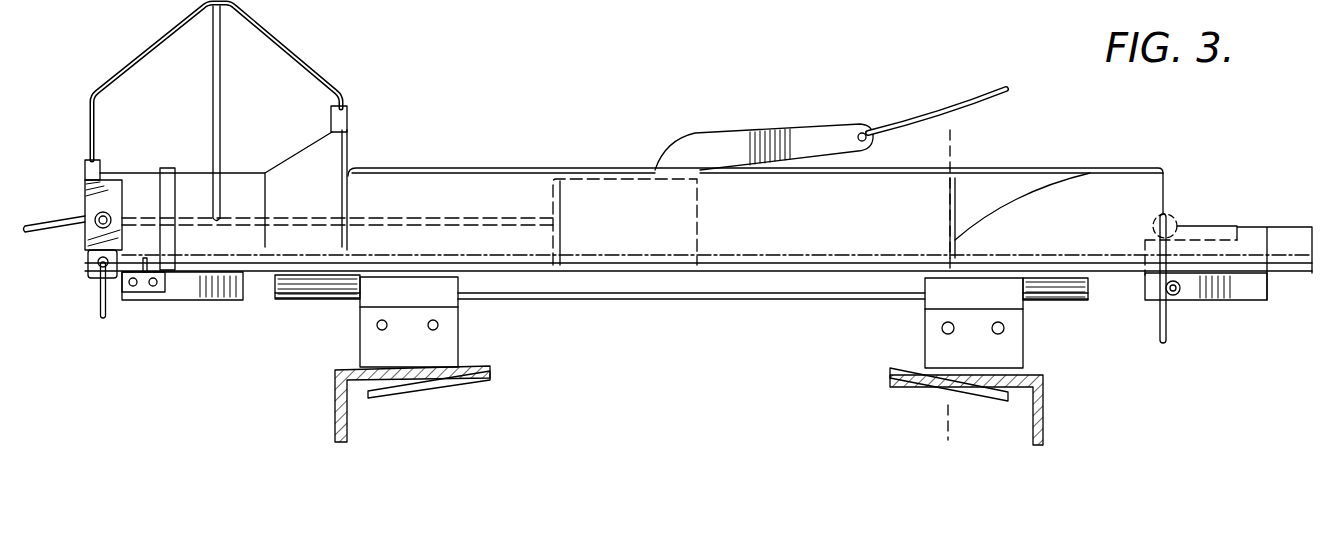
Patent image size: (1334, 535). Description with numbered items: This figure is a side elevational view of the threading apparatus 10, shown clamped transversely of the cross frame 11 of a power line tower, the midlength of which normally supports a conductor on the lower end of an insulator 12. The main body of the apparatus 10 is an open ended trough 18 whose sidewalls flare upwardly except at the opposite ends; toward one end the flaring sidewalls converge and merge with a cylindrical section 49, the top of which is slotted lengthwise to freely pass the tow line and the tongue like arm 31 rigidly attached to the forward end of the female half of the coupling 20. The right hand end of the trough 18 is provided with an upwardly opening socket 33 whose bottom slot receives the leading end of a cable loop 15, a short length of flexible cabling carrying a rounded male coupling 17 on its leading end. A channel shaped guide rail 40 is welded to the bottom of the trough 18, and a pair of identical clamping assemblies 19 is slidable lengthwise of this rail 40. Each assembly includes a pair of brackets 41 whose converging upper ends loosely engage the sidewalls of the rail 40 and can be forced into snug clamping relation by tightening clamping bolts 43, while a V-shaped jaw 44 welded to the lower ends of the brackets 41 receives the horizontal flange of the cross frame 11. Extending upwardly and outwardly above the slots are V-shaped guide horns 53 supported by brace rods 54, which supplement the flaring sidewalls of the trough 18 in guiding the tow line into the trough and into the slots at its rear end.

The threading apparatus 10 is at (1182, 130).
The cross frame 11 is at (334, 418).
The insulator 12 is at (947, 140).
The cable loop 15 is at (1170, 326).
The male coupling 17 is at (1176, 214).
The trough 18 is at (447, 167).
The clamping assemblies 19 is at (461, 340).
The coupling 20 is at (702, 212).
The tongue like arm 31 is at (756, 128).
The socket 33 is at (1218, 222).
The guide rail 40 is at (752, 282).
The brackets 41 is at (360, 348).
The clamping bolts 43 is at (428, 347).
The V-shaped jaw 44 is at (478, 385).
The cylindrical section 49 is at (239, 173).
The guide horns 53 is at (284, 43).
The brace rods 54 is at (222, 87).